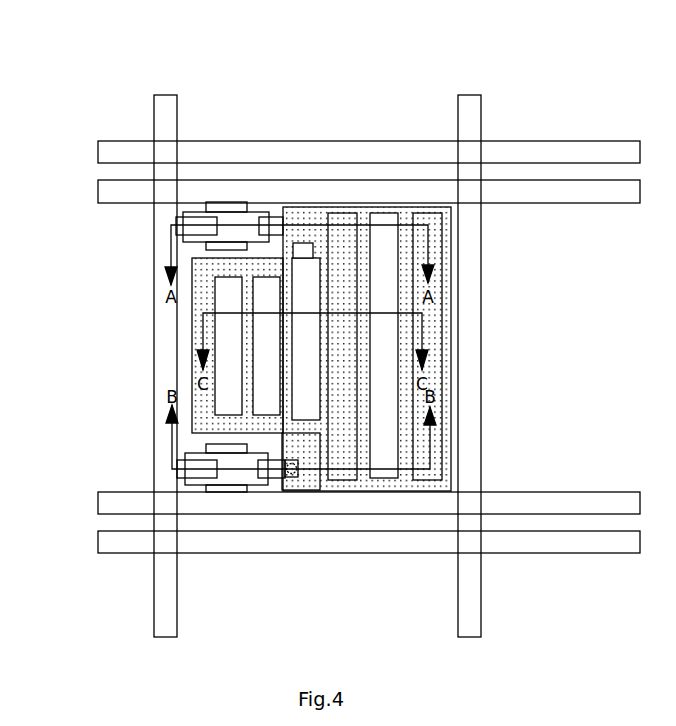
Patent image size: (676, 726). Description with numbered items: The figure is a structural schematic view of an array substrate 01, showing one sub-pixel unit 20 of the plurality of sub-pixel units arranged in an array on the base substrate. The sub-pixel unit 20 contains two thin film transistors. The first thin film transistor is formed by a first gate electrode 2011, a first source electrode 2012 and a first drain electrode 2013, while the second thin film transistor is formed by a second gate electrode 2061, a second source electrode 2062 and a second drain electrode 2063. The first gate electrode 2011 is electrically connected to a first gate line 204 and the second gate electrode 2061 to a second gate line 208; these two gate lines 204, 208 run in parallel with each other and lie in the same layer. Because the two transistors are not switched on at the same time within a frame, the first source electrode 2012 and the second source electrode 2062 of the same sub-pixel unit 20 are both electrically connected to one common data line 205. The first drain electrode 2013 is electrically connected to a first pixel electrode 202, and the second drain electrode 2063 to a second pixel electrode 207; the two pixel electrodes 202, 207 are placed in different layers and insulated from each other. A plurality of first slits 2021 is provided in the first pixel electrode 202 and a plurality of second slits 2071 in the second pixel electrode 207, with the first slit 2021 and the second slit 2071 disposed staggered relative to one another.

The array substrate 01 is at (88, 40).
The data line 205 is at (169, 110).
The second gate line 208 is at (330, 316).
The first gate line 204 is at (331, 377).
The first gate electrode 2011 is at (217, 245).
The first source electrode 2012 is at (190, 222).
The first drain electrode 2013 is at (270, 222).
The first pixel electrode 202 is at (302, 207).
The first slit 2021 is at (380, 218).
The sub-pixel unit 20 is at (188, 360).
The second gate electrode 2061 is at (215, 449).
The second source electrode 2062 is at (192, 473).
The second drain electrode 2063 is at (270, 473).
The second pixel electrode 207 is at (293, 487).
The second slit 2071 is at (347, 478).